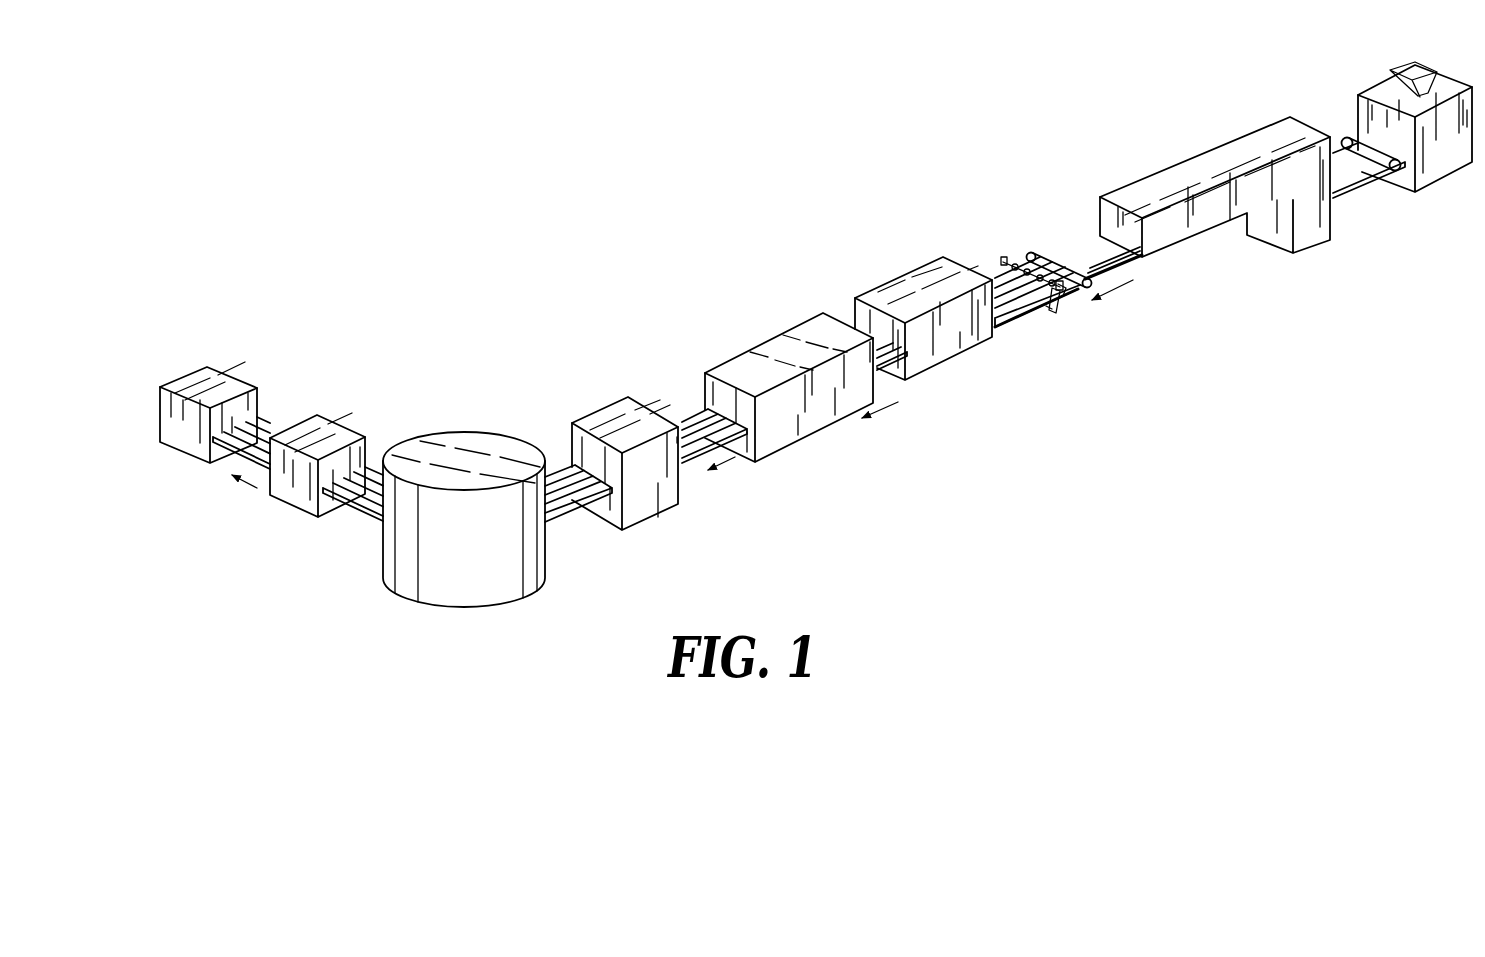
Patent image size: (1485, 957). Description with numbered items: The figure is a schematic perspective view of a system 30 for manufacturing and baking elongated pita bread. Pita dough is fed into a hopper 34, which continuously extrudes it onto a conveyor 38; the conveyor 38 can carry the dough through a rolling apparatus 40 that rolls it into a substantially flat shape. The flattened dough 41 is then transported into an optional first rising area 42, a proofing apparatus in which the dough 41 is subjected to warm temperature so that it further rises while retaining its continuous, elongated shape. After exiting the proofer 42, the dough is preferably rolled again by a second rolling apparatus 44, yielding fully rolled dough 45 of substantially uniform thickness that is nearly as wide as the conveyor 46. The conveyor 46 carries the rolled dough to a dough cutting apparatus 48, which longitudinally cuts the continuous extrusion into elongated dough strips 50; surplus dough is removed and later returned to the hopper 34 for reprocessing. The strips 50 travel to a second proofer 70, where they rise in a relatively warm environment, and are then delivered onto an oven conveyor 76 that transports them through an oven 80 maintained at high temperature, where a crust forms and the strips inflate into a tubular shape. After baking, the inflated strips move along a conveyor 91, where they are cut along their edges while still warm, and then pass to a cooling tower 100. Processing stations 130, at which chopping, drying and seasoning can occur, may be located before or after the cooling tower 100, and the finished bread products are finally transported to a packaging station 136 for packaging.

The system 30 is at (600, 190).
The hopper 34 is at (1427, 62).
The conveyor 38 is at (1367, 190).
The rolling apparatus 40 is at (1347, 143).
The flattened dough 41 is at (1347, 172).
The first rising area 42 is at (1243, 138).
The second rolling apparatus 44 is at (1047, 258).
The fully rolled dough 45 is at (1033, 273).
The conveyor 46 is at (1070, 292).
The dough cutting apparatus 48 is at (996, 248).
The elongated dough strips 50 is at (1000, 282).
The second proofer 70 is at (953, 352).
The oven conveyor 76 is at (882, 372).
The oven 80 is at (767, 345).
The conveyor 91 is at (690, 455).
The cooling tower 100 is at (513, 595).
The processing stations 130 is at (630, 395).
The packaging station 136 is at (210, 372).